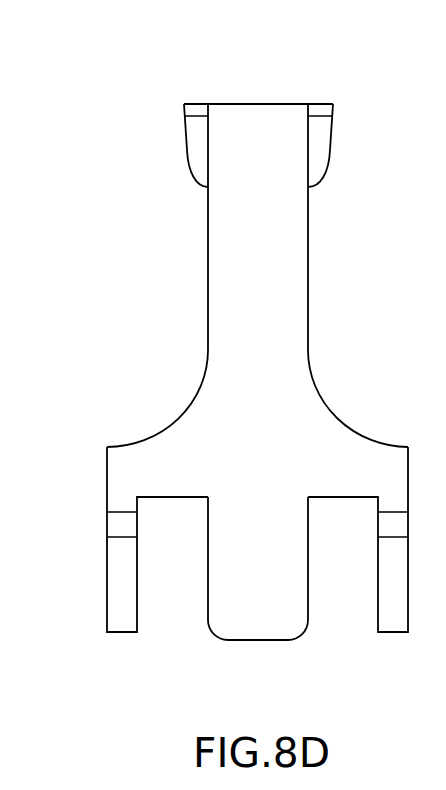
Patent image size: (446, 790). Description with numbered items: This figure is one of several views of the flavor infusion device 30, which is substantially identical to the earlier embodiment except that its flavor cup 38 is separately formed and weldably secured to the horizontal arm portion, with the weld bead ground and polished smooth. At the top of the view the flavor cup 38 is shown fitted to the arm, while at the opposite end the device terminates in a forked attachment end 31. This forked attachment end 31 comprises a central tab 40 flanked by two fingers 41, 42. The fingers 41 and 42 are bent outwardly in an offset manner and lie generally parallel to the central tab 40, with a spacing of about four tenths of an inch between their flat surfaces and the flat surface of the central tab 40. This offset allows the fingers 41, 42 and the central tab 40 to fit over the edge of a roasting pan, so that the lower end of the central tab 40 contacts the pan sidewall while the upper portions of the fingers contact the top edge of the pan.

The flavor infusion device 30 is at (257, 401).
The flavor cup 38 is at (335, 130).
The forked attachment end 31 is at (257, 595).
The finger 42 is at (138, 565).
The finger 41 is at (378, 564).
The central tab 40 is at (258, 641).